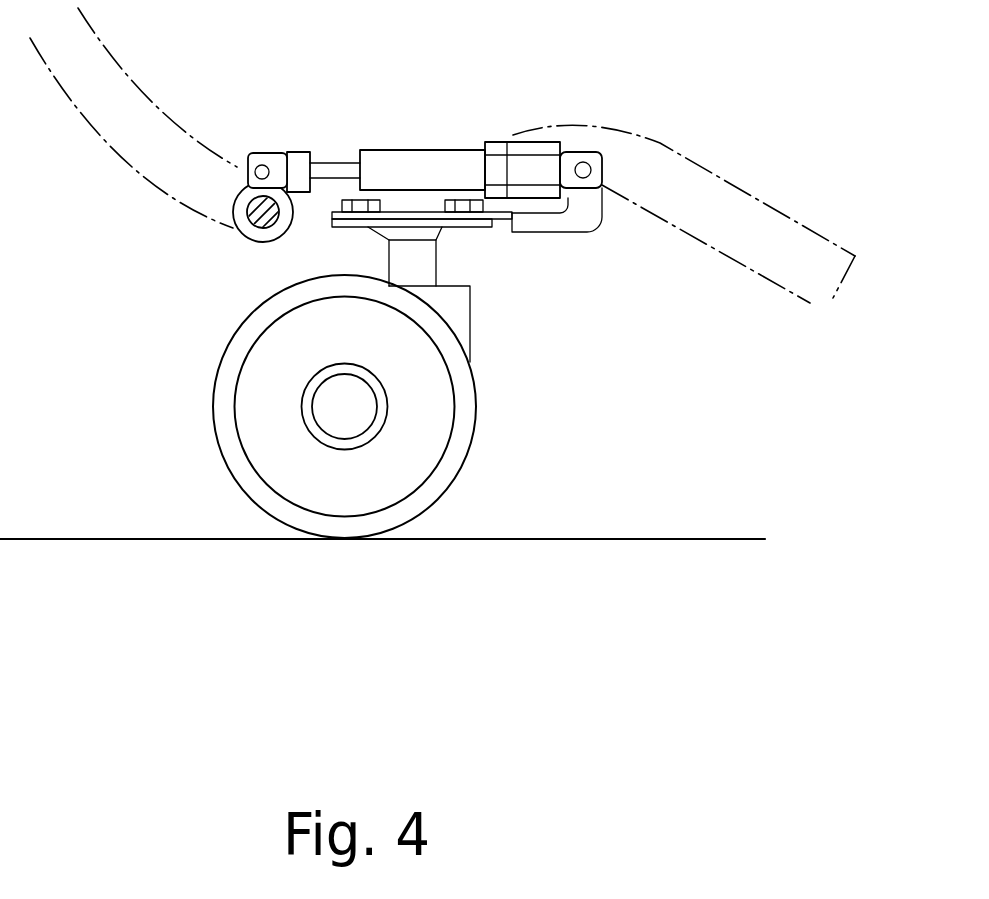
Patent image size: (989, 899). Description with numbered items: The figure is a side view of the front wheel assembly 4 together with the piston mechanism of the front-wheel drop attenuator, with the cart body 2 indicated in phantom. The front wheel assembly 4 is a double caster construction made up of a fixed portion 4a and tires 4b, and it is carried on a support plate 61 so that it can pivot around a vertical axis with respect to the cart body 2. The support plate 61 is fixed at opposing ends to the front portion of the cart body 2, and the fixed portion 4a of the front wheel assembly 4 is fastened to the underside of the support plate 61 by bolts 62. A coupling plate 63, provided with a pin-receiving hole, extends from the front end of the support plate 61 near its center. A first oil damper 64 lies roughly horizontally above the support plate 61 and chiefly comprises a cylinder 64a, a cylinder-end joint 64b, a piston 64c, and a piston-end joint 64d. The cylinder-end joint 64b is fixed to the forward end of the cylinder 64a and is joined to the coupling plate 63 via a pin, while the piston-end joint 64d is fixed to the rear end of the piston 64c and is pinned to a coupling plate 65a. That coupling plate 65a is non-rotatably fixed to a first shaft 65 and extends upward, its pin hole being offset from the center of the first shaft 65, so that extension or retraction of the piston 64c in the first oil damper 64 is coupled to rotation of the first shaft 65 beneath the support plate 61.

The cart body 2 is at (667, 147).
The front wheel assembly 4 is at (428, 382).
The fixed portion 4a is at (460, 308).
The tires 4b is at (587, 335).
The support plate 61 is at (500, 222).
The bolts 62 is at (358, 203).
The coupling plate 63 is at (568, 222).
The first oil damper 64 is at (379, 168).
The cylinder 64a is at (410, 167).
The cylinder-end joint 64b is at (572, 158).
The piston 64c is at (325, 168).
The piston-end joint 64d is at (278, 163).
The first shaft 65 is at (265, 220).
The coupling plate 65a is at (233, 197).